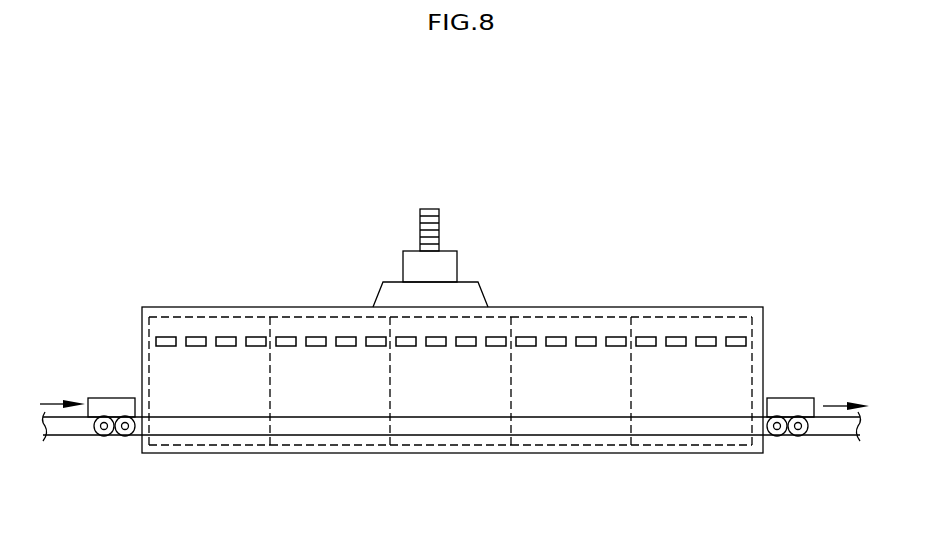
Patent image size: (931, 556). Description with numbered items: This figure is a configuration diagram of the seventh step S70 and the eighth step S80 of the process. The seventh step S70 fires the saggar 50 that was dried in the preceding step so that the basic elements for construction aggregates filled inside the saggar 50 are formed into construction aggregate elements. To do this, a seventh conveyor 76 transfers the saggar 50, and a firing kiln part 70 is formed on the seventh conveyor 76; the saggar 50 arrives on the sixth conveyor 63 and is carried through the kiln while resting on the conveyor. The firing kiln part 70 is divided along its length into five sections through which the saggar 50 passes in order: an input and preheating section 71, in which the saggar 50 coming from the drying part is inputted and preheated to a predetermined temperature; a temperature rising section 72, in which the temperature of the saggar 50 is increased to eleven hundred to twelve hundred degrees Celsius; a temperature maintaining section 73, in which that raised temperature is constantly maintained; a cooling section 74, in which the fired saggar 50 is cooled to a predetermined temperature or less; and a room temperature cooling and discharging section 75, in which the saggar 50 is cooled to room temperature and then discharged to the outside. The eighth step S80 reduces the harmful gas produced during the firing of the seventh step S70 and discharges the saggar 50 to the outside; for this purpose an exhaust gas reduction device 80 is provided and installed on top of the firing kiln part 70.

The firing kiln part 70 is at (181, 290).
The seventh step S70 is at (281, 222).
The input and preheating section 71 is at (229, 316).
The temperature rising section 72 is at (337, 316).
The temperature maintaining section 73 is at (495, 316).
The cooling section 74 is at (592, 316).
The room temperature cooling and discharging section 75 is at (712, 316).
The exhaust gas reduction device 80 is at (472, 249).
The eighth step S80 is at (455, 180).
The saggar 50 is at (111, 408).
The sixth conveyor 63 is at (75, 437).
The seventh conveyor 76 is at (125, 437).